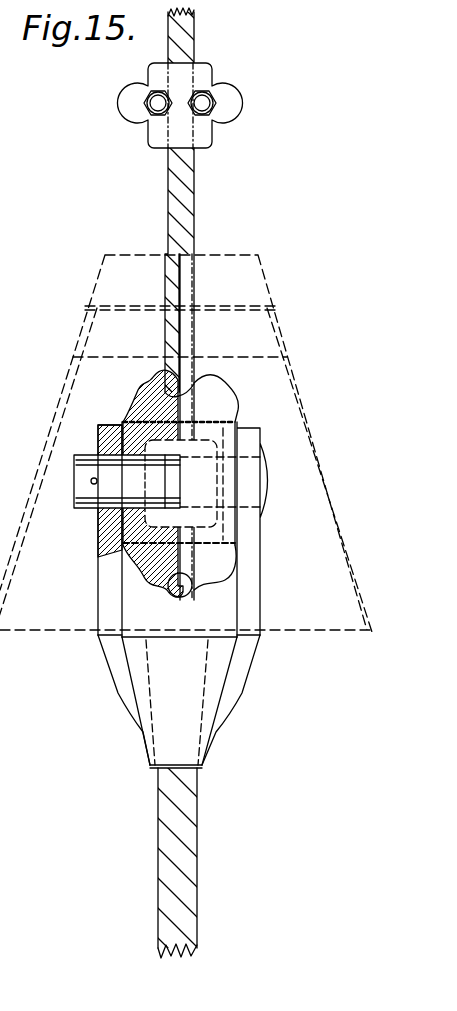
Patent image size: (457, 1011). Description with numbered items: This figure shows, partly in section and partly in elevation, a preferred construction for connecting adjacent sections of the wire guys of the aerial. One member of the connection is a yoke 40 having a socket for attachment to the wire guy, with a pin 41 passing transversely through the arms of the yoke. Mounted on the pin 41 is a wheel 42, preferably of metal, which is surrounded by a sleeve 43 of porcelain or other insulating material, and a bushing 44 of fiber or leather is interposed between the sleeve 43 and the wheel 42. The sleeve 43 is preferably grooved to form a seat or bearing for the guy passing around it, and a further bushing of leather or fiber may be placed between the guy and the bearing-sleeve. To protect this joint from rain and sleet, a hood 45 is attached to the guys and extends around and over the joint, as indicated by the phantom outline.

The yoke 40 is at (201, 595).
The pin 41 is at (73, 506).
The wheel 42 is at (125, 428).
The sleeve 43 is at (222, 398).
The bushing 44 is at (135, 413).
The hood 45 is at (313, 438).